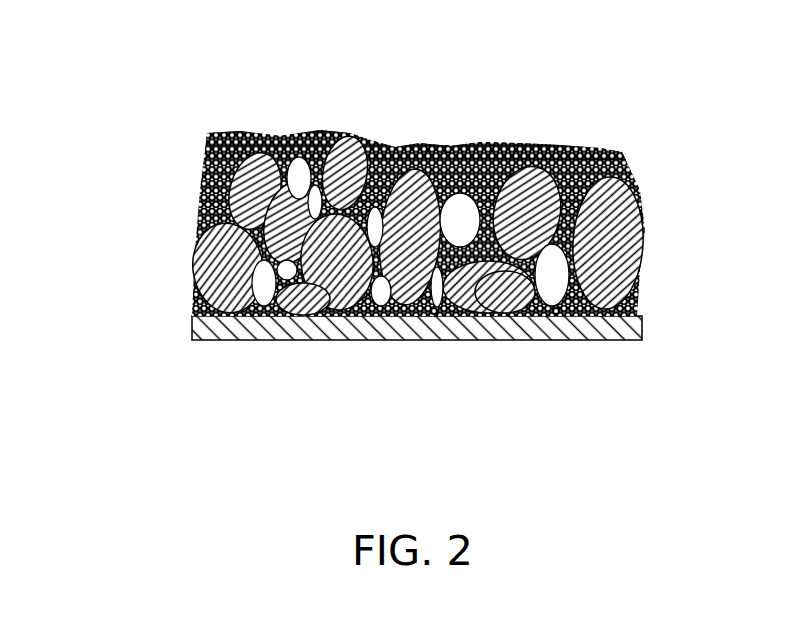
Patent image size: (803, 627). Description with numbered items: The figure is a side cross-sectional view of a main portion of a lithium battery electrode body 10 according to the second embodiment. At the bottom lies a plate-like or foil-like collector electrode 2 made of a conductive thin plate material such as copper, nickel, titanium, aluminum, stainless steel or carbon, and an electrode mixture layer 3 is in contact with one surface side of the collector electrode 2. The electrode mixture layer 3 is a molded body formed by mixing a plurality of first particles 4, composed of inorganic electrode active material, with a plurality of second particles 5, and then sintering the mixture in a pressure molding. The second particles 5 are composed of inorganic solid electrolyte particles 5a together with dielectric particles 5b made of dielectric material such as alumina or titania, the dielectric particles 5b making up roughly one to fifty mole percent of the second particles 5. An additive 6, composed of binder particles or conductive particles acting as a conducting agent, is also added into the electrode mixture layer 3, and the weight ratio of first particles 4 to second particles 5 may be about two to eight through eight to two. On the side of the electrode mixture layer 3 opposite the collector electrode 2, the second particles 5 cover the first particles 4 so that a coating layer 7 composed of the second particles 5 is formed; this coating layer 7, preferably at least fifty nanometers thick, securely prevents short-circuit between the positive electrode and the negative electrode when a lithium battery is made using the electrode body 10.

The lithium battery electrode body 10 is at (124, 148).
The collector electrode 2 is at (200, 328).
The electrode mixture layer 3 is at (170, 134).
The first particles 4 is at (349, 140).
The second particles 5 is at (518, 73).
The inorganic solid electrolyte particles 5a is at (517, 144).
The dielectric particles 5b is at (447, 144).
The additive 6 is at (300, 157).
The coating layer 7 is at (631, 142).